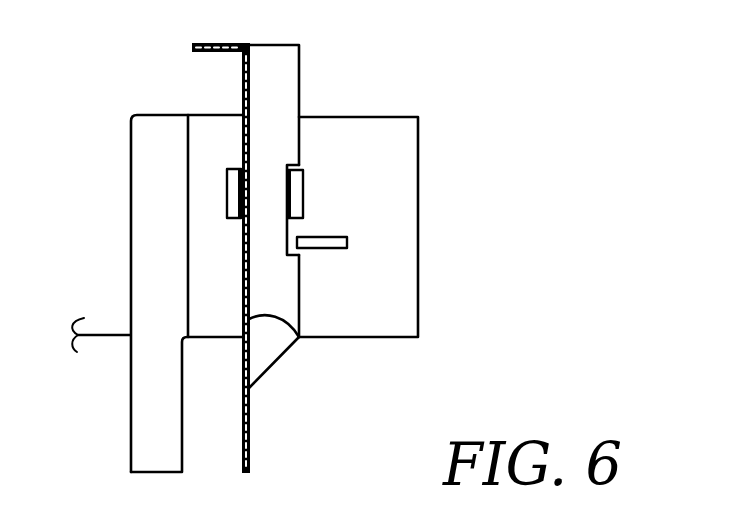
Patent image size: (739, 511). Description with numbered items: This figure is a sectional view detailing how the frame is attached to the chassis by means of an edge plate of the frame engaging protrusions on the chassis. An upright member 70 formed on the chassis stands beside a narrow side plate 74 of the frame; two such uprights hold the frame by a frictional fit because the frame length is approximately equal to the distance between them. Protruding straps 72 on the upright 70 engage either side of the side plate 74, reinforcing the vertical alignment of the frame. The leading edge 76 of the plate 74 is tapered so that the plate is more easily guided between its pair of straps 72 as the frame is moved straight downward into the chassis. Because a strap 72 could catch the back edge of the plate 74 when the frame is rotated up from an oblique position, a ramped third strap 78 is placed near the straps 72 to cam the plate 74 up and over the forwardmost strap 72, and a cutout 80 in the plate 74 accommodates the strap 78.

The upright member 70 is at (350, 117).
The protruding strap 72 is at (227, 210).
The side plate 74 is at (267, 258).
The leading edge 76 is at (272, 365).
The third strap 78 is at (347, 242).
The cutout 80 is at (288, 229).